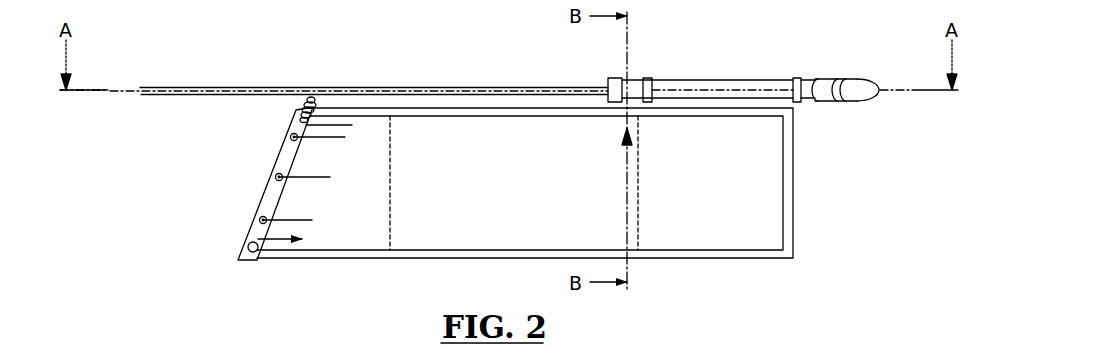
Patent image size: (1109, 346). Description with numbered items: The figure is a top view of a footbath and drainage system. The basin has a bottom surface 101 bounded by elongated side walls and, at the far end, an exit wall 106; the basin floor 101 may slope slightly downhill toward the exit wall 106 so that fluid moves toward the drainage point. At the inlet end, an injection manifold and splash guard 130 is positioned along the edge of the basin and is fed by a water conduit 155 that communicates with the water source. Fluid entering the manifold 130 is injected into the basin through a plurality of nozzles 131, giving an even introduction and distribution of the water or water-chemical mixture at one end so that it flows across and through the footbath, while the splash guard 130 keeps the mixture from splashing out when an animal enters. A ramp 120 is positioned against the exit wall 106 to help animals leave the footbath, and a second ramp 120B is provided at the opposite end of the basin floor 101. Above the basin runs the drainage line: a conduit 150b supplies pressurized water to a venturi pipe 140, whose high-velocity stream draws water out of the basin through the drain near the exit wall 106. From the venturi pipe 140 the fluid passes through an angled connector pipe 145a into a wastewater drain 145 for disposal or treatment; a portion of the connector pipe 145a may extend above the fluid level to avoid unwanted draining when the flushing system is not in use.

The bottom surface 101 is at (462, 208).
The exit wall 106 is at (792, 165).
The ramp 120 is at (716, 232).
The second ramp 120B is at (330, 240).
The injection manifold and splash guard 130 is at (262, 200).
The nozzles 131 is at (291, 139).
The venturi pipe 140 is at (609, 79).
The wastewater drain 145 is at (852, 95).
The angled connector pipe 145a is at (672, 85).
The conduit 150b is at (268, 90).
The water conduit 155 is at (300, 108).